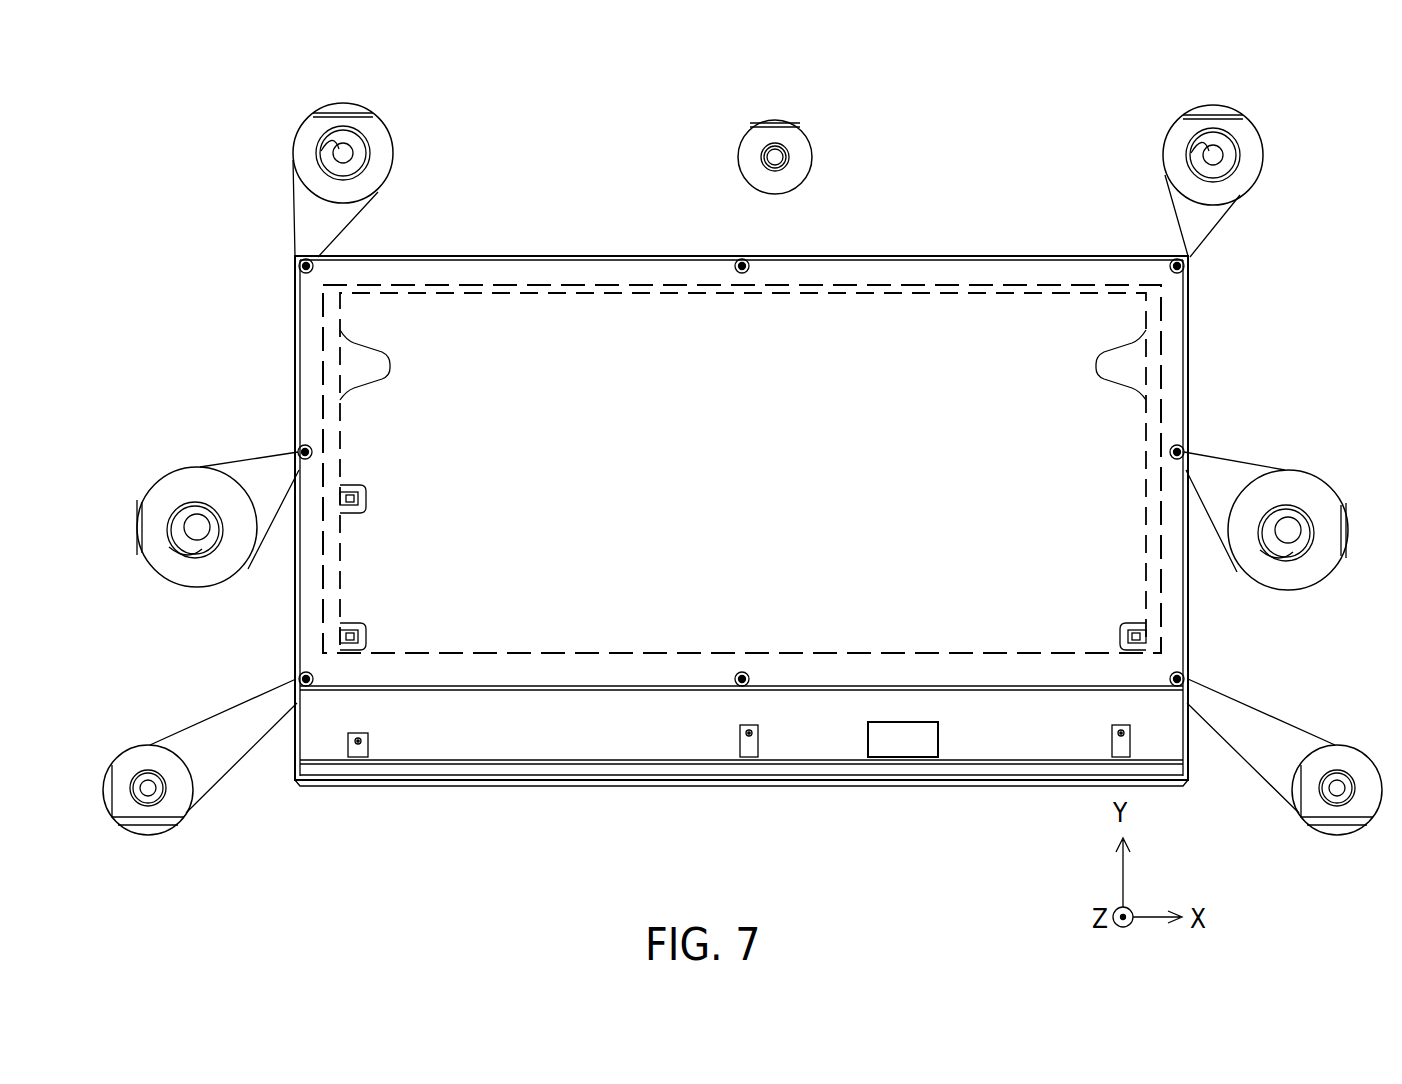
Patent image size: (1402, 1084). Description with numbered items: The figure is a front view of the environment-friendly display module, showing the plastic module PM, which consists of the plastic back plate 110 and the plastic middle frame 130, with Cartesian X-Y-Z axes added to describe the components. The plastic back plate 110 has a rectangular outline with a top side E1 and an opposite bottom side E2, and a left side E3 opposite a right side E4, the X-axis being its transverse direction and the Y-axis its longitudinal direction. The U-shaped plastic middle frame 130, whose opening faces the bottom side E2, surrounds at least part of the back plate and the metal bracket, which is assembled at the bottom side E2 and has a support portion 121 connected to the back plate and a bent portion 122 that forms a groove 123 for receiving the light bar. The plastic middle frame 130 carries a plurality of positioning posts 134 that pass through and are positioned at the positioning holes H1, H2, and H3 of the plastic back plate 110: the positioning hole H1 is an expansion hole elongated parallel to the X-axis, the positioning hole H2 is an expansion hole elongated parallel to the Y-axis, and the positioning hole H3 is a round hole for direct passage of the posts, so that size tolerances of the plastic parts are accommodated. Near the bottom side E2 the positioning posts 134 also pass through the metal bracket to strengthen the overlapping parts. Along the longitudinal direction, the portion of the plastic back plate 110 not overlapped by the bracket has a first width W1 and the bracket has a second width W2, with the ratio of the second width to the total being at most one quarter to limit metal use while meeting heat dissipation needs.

The plastic back plate 110 is at (586, 278).
The plastic middle frame 130 is at (322, 362).
The positioning posts 134 is at (368, 150).
The support portion 121 is at (605, 665).
The bent portion 122 is at (698, 766).
The groove 123 is at (450, 755).
The plastic module PM is at (130, 46).
The positioning hole H1 is at (340, 155).
The positioning hole H2 is at (195, 558).
The positioning hole H3 is at (770, 157).
The top side E1 is at (654, 257).
The bottom side E2 is at (795, 691).
The left side E3 is at (294, 410).
The right side E4 is at (1189, 378).
The first width W1 is at (1024, 260).
The second width W2 is at (1024, 660).